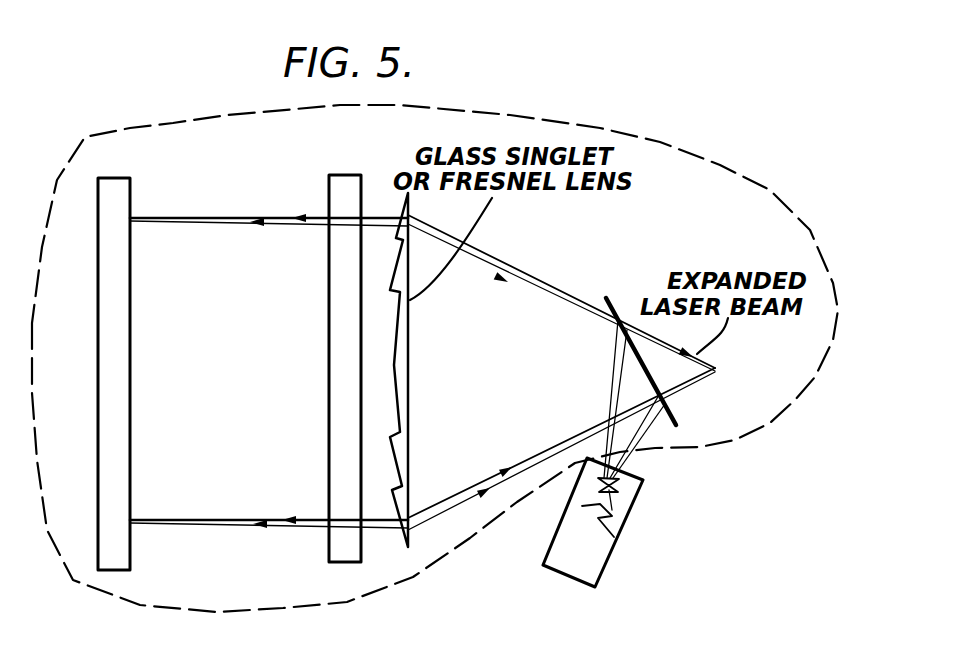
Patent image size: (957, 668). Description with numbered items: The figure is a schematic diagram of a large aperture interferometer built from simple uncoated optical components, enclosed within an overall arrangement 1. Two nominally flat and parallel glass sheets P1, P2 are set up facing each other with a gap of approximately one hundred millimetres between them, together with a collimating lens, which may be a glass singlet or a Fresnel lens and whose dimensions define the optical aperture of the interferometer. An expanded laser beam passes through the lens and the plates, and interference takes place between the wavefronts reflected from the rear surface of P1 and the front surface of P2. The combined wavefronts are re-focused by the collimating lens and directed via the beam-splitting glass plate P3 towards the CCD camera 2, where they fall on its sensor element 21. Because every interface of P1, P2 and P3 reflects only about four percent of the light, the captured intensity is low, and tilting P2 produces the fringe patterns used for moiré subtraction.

The optical measuring head housing 1 is at (751, 176).
The CCD camera 2 is at (606, 570).
The CCD sensor element 21 is at (614, 538).
The glass sheet P1 is at (320, 336).
The glass sheet P2 is at (138, 462).
The beam-splitting glass plate P3 is at (630, 350).